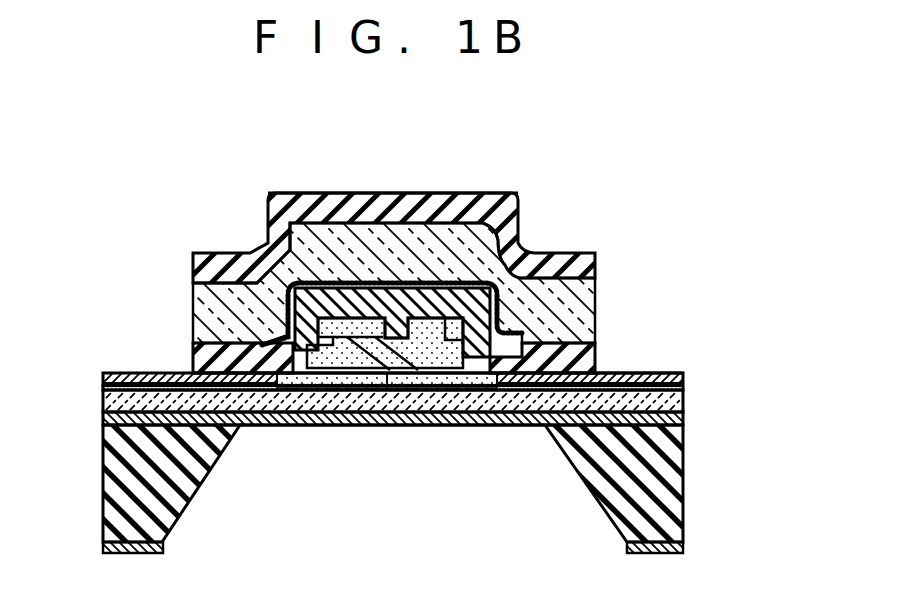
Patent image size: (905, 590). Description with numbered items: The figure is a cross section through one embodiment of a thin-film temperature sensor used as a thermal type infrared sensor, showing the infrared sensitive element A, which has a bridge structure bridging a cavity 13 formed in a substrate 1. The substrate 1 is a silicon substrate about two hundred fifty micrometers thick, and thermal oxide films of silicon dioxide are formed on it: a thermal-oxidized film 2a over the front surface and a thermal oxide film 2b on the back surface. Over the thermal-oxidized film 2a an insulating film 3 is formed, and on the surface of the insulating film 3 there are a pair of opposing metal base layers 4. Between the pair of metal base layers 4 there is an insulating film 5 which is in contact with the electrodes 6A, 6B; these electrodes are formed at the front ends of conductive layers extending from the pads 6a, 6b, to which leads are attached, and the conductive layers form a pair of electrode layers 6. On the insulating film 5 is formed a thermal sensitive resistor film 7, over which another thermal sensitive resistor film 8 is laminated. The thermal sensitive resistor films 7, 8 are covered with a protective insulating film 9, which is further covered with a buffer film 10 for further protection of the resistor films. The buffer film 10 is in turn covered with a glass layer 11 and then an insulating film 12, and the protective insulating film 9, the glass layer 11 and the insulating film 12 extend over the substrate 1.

The infrared sensitive element A is at (471, 177).
The substrate 1 is at (663, 502).
The thermal-oxidized film 2a is at (686, 418).
The thermal oxide film 2b is at (687, 546).
The insulating film 3 is at (685, 399).
The metal base layers 4 is at (685, 381).
The insulating film 5 is at (463, 333).
The electrode layers 6 is at (182, 366).
The pad 6a is at (122, 373).
The pad 6b is at (647, 368).
The electrode 6A is at (307, 350).
The electrode 6B is at (463, 330).
The thermal sensitive resistor film 7 is at (437, 317).
The thermal sensitive resistor film 8 is at (468, 283).
The protective insulating film 9 is at (194, 348).
The buffer film 10 is at (226, 330).
The glass layer 11 is at (202, 290).
The insulating film 12 is at (205, 263).
The cavity 13 is at (390, 430).